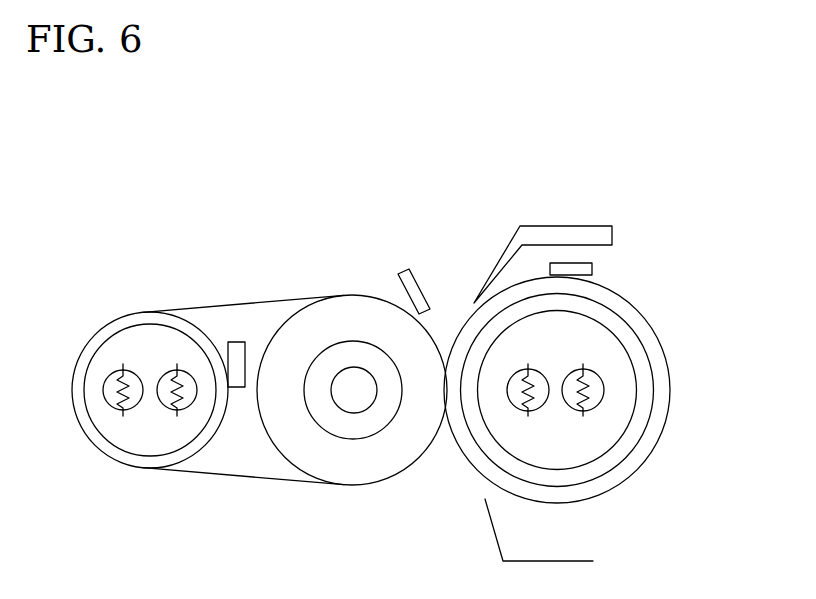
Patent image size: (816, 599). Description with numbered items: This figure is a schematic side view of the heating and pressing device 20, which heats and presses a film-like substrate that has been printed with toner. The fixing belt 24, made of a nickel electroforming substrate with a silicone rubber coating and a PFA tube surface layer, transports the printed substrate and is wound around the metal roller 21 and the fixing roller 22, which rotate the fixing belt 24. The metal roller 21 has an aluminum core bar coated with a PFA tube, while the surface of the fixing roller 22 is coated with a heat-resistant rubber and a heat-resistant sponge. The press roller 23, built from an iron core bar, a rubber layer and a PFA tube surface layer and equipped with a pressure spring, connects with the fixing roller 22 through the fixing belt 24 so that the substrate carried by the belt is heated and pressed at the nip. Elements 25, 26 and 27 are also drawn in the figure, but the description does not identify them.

The heating and pressing device 20 is at (452, 206).
The metal roller 21 is at (93, 350).
The fixing roller 22 is at (394, 463).
The press roller 23 is at (662, 355).
The fixing belt 24 is at (291, 296).
The heater 25 is at (105, 405).
The temperature sensor 26 is at (240, 342).
The temperature sensor 27 is at (592, 268).